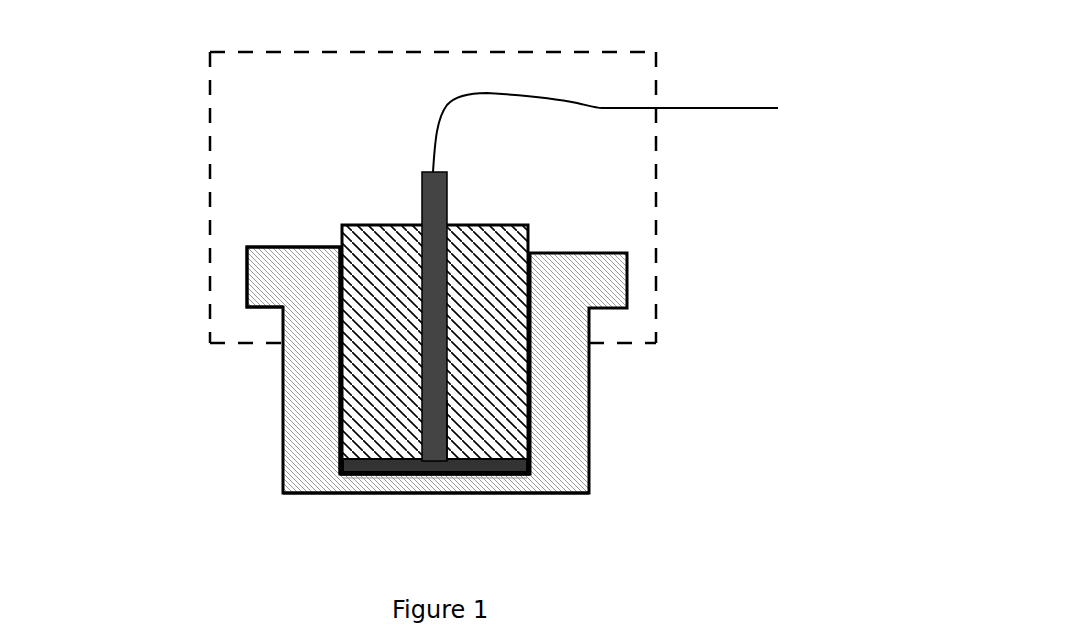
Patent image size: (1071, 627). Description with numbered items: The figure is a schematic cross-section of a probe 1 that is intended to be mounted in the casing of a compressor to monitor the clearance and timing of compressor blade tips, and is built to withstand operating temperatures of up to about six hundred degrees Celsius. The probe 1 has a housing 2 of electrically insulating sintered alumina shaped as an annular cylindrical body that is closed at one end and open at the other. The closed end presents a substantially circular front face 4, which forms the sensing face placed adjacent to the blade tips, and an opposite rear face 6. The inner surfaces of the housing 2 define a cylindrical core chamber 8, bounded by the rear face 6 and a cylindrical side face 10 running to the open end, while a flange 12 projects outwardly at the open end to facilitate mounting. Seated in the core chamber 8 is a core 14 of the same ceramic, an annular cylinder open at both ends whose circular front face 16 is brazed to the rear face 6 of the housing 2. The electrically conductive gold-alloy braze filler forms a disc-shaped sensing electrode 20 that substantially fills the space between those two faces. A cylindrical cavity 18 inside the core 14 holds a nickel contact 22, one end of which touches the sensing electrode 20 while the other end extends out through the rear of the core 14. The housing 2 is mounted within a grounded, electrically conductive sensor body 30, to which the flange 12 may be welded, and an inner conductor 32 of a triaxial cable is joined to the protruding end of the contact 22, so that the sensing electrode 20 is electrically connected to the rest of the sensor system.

The probe 1 is at (266, 206).
The housing 2 is at (310, 443).
The front face 4 is at (333, 494).
The rear face 6 is at (462, 472).
The core chamber 8 is at (330, 368).
The cylindrical side face 10 is at (338, 405).
The flange 12 is at (265, 288).
The core 14 is at (500, 370).
The front face 16 is at (507, 478).
The cylindrical cavity 18 is at (447, 399).
The sensing electrode 20 is at (400, 470).
The contact 22 is at (447, 429).
The sensor body 30 is at (656, 202).
The inner conductor 32 is at (735, 103).